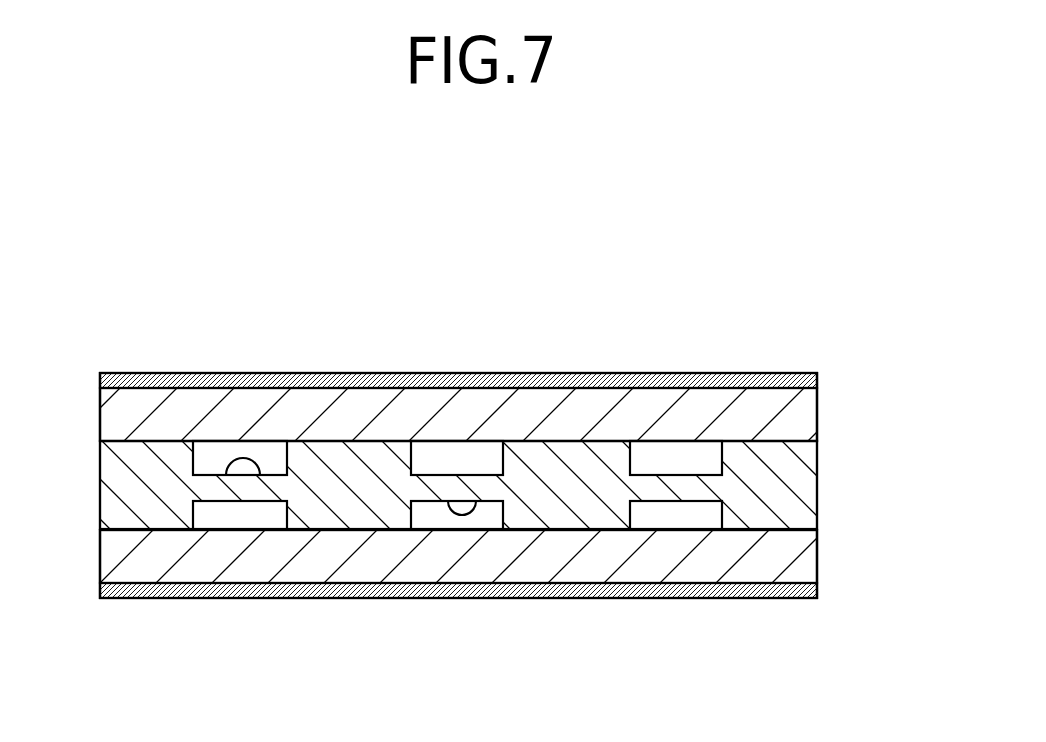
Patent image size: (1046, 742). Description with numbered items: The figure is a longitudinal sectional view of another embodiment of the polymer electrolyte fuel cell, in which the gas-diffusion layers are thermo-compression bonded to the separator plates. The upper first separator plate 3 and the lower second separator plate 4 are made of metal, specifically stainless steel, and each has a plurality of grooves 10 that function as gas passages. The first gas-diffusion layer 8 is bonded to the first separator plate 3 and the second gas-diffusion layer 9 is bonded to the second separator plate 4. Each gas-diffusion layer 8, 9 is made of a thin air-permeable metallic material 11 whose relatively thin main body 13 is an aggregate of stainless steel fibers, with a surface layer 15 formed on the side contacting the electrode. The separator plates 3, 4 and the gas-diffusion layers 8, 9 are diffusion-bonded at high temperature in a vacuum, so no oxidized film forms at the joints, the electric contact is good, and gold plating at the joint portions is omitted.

The first separator plate 3 is at (481, 485).
The second separator plate 4 is at (796, 486).
The first gas-diffusion layer 8 is at (95, 530).
The second gas-diffusion layer 9 is at (95, 373).
The grooves 10 is at (476, 510).
The air-permeable metallic material 11 is at (832, 389).
The main body 13 is at (625, 403).
The surface layer 15 is at (548, 372).